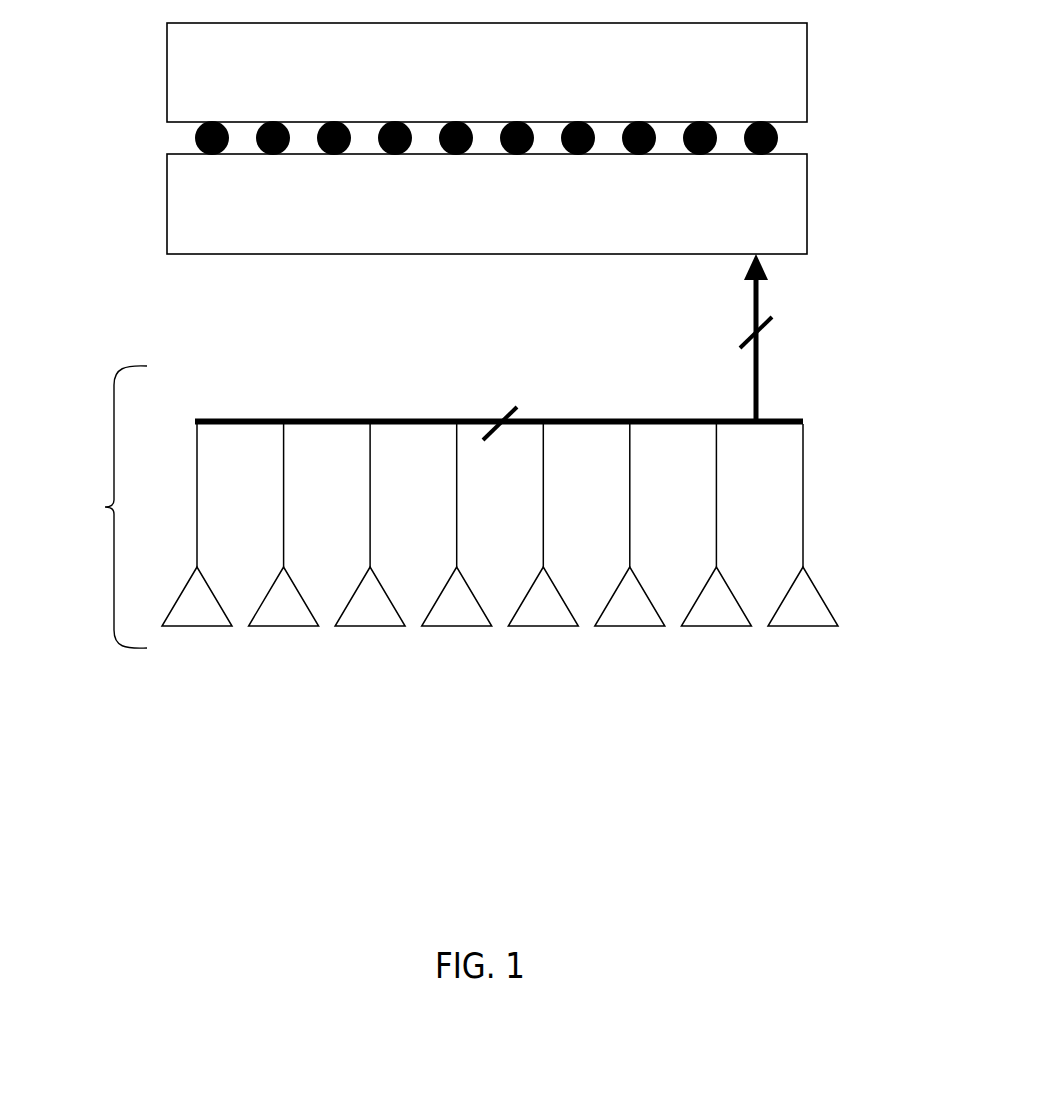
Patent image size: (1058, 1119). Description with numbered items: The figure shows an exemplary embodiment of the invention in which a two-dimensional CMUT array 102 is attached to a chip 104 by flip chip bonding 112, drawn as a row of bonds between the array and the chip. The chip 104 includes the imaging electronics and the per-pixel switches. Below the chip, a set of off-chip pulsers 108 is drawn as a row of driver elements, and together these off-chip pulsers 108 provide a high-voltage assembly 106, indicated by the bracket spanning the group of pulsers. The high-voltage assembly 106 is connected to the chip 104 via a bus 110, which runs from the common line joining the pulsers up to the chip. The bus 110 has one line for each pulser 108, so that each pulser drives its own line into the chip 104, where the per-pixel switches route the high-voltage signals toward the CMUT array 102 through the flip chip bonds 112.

The 2-D CMUT array 102 is at (508, 83).
The chip 104 is at (508, 216).
The high-voltage assembly 106 is at (105, 507).
The off-chip pulser 108 is at (500, 572).
The bus 110 is at (757, 373).
The flip chip bond 112 is at (804, 140).